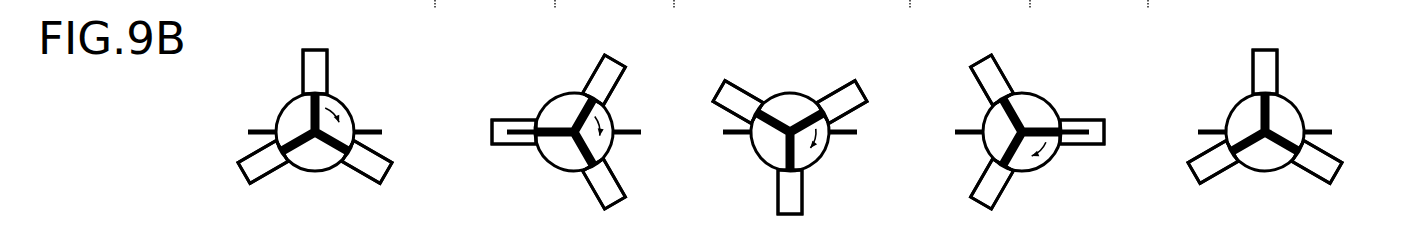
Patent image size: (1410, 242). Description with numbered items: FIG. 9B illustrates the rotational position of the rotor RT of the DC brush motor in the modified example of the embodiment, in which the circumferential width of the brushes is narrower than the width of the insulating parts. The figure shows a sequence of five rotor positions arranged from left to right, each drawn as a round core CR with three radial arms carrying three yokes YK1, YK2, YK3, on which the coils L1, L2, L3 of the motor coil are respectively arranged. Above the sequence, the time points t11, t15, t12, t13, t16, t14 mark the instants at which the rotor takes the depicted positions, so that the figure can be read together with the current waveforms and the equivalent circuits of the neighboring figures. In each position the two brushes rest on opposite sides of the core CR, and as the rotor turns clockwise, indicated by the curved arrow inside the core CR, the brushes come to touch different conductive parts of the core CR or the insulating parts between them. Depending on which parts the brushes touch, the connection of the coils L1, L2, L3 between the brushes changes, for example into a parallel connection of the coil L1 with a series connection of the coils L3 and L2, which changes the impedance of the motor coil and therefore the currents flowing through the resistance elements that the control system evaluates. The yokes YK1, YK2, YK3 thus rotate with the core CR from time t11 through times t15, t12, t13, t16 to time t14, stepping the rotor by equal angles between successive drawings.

The core CR is at (316, 188).
The element YK1 is at (316, 52).
The second yoke (salient pole) YK2 is at (389, 178).
The third yoke (salient pole) YK3 is at (245, 176).
The coil L1 is at (296, 68).
The coil L2 is at (357, 182).
The coil L3 is at (240, 153).
The time point t11 is at (434, 14).
The time point t12 is at (671, 14).
The time point t13 is at (911, 14).
The time point t14 is at (1148, 14).
The time point t15 is at (554, 14).
The time point t16 is at (1031, 14).